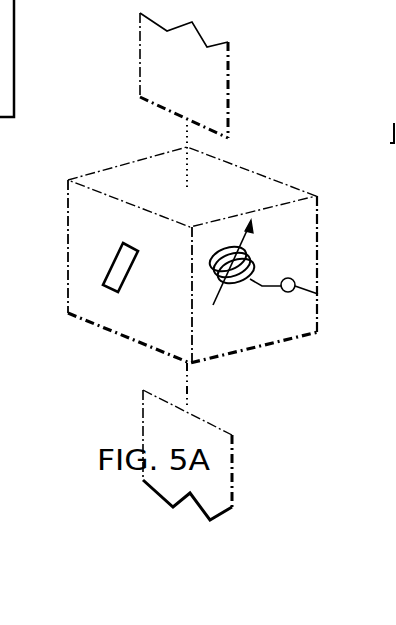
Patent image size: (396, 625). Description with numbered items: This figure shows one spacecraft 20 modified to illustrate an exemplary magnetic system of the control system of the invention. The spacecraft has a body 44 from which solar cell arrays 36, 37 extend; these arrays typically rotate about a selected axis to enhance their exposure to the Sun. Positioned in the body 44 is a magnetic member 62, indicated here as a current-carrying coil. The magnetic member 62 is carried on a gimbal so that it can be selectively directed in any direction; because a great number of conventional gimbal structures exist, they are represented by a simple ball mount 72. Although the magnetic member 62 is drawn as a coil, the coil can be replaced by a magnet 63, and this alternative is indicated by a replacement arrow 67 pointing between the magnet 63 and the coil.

The spacecraft 20 is at (277, 163).
The solar cell array 36 is at (229, 55).
The solar cell array 37 is at (233, 470).
The body 44 is at (320, 306).
The magnetic member 62 is at (253, 260).
The magnet 63 is at (120, 247).
The replacement arrow 67 is at (210, 269).
The ball mount 72 is at (318, 294).